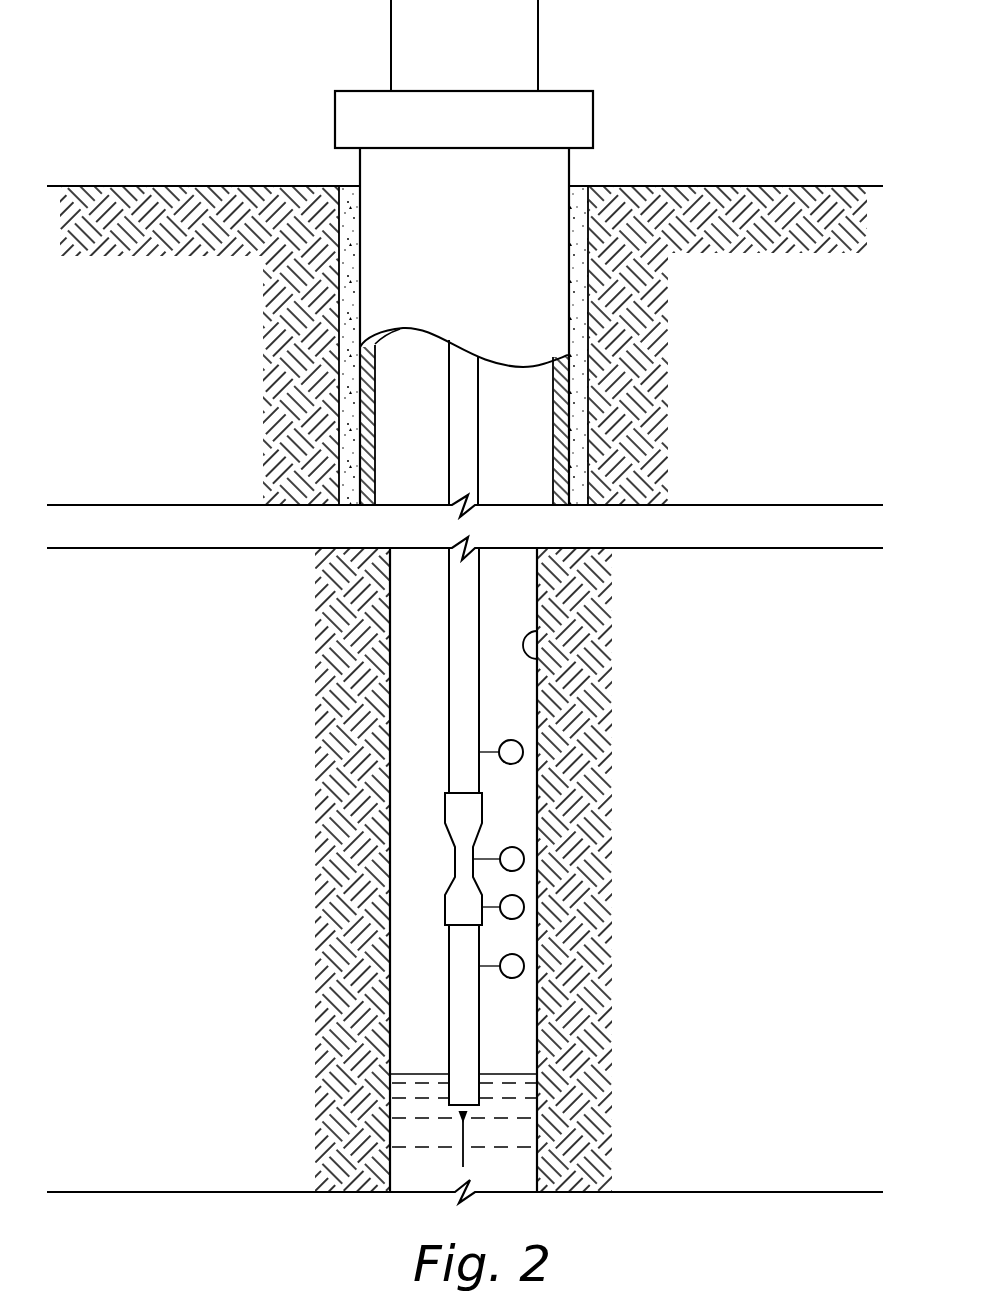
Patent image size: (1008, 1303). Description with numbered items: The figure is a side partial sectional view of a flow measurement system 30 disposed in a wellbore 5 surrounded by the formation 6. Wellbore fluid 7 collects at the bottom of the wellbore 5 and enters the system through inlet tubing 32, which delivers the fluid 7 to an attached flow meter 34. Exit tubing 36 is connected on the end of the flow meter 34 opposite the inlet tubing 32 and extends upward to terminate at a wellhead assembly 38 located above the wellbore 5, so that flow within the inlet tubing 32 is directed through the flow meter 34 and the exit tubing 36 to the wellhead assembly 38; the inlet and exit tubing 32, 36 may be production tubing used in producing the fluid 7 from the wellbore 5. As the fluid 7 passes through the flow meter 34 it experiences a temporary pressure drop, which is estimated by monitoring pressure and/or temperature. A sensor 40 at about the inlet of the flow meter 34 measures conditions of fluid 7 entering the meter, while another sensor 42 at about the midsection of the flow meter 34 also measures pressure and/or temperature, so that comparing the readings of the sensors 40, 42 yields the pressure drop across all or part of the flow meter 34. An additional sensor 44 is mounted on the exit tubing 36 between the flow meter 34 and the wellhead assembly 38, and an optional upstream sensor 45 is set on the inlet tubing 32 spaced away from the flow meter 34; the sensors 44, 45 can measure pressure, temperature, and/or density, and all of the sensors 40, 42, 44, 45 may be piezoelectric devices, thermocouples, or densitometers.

The wellhead assembly 38 is at (593, 117).
The exit tubing 36 is at (479, 588).
The wellbore 5 is at (537, 632).
The formation 6 is at (597, 670).
The sensor 44 is at (523, 752).
The flow measurement system 30 is at (513, 788).
The flow meter 34 is at (482, 828).
The sensor 42 is at (524, 859).
The sensor 40 is at (524, 907).
The upstream sensor 45 is at (524, 966).
The inlet tubing 32 is at (479, 1030).
The wellbore fluid 7 is at (517, 1173).